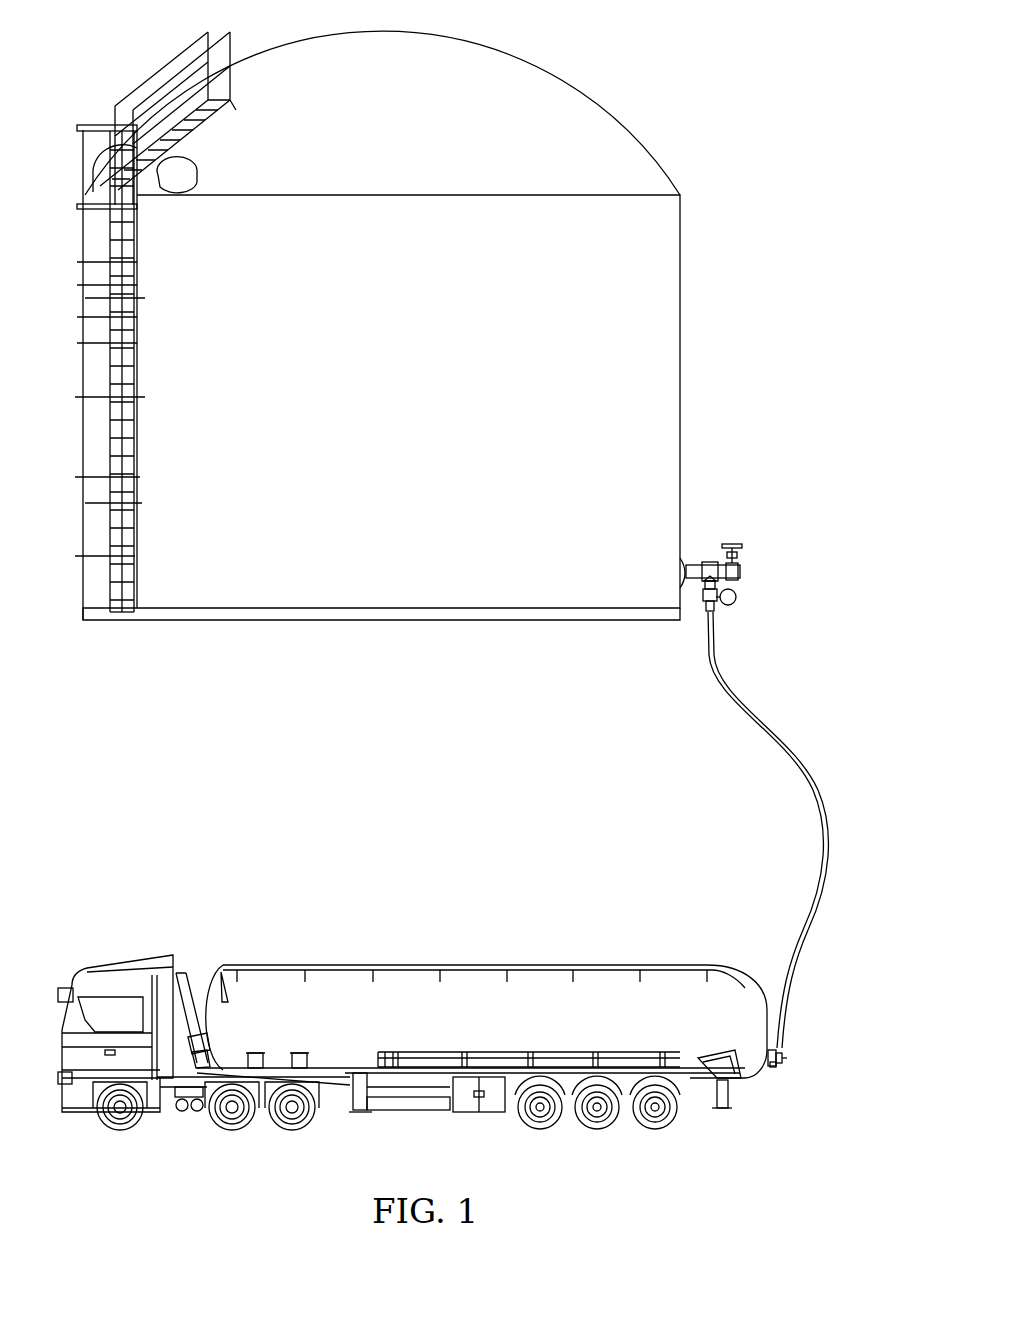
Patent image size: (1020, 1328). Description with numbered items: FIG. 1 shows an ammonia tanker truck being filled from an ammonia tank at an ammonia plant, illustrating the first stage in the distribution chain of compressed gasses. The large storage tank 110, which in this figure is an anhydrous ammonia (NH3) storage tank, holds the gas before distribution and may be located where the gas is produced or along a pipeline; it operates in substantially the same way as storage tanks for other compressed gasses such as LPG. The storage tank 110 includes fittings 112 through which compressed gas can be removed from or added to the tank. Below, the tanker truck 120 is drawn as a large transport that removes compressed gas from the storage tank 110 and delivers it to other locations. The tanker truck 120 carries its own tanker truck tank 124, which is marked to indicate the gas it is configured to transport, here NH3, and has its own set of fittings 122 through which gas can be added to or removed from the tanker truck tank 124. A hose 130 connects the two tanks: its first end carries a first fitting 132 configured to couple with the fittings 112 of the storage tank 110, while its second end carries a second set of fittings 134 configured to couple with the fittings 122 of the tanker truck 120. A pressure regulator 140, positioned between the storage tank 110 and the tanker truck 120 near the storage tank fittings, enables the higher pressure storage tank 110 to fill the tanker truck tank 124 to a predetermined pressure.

The storage tank 110 is at (665, 320).
The fittings 112 is at (737, 572).
The pressure regulator 140 is at (738, 596).
The first fitting 132 is at (718, 606).
The hose 130 is at (820, 797).
The tanker truck 120 is at (403, 993).
The tanker truck tank 124 is at (354, 1025).
The second set of fittings 134 is at (782, 1050).
The fittings 122 is at (774, 1066).